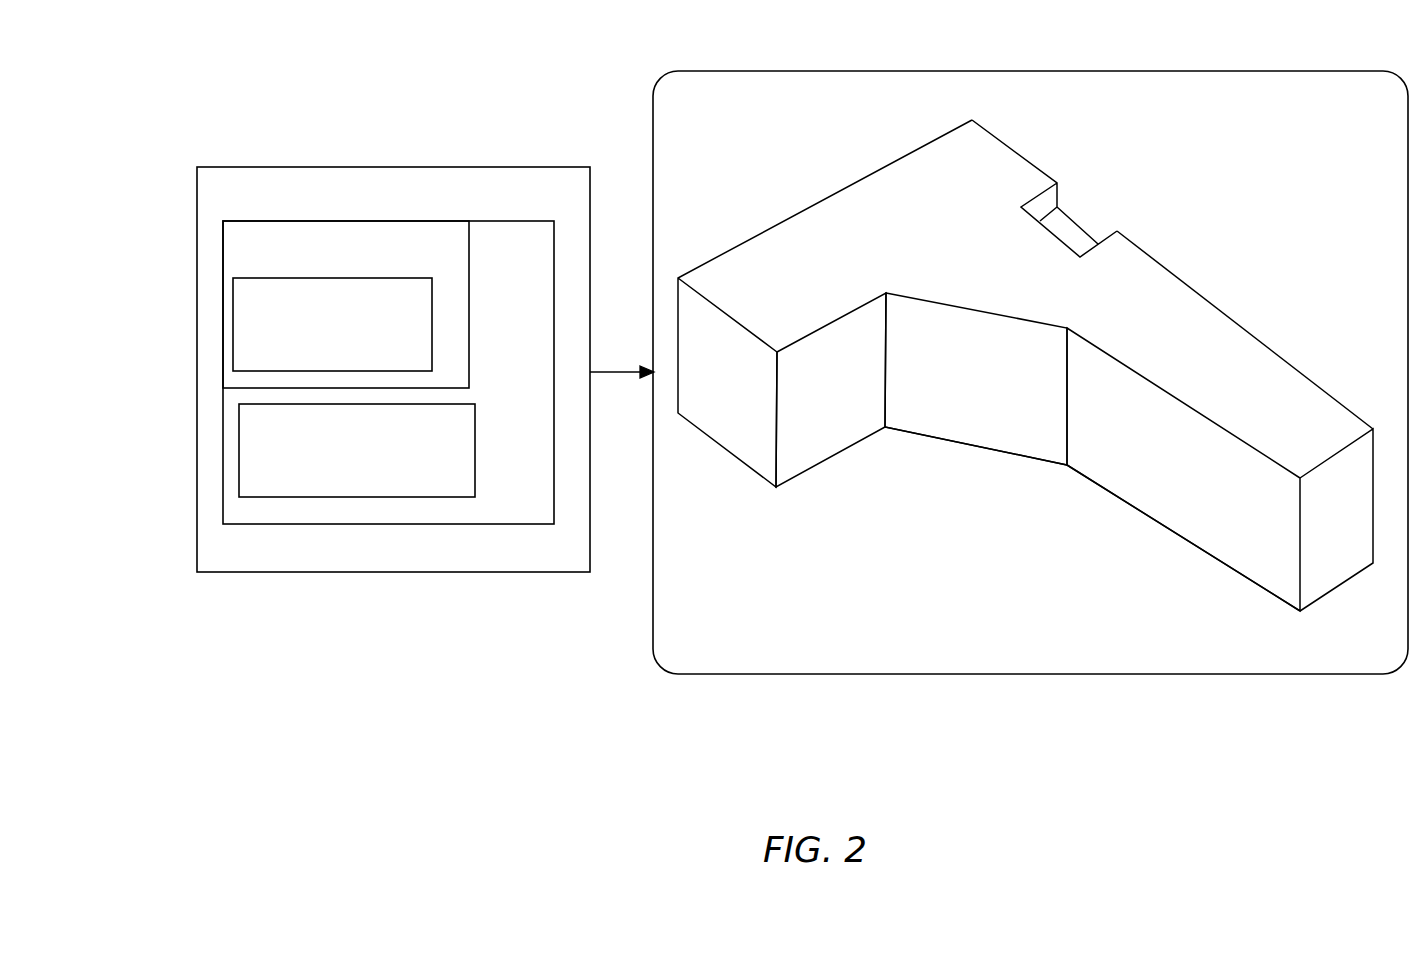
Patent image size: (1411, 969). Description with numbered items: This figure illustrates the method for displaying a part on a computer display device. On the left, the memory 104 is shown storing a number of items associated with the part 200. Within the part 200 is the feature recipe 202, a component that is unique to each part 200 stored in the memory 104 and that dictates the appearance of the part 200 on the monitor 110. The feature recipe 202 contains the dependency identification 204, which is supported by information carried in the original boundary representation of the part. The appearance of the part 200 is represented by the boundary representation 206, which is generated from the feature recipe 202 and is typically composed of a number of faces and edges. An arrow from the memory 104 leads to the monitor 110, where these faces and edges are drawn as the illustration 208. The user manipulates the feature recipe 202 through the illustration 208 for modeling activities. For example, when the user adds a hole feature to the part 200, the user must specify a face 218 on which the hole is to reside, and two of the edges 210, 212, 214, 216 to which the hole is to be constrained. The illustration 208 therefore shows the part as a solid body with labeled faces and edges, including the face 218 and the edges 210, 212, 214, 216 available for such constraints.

The memory 104 is at (393, 394).
The monitor 110 is at (1032, 72).
The part 200 is at (388, 390).
The feature recipe 202 is at (376, 304).
The dependency identification 204 is at (432, 323).
The boundary representation 206 is at (477, 450).
The illustration 208 is at (1025, 365).
The edge 210 is at (960, 443).
The edge 212 is at (832, 458).
The edge 214 is at (1193, 545).
The edge 216 is at (978, 308).
The face 218 is at (1003, 409).